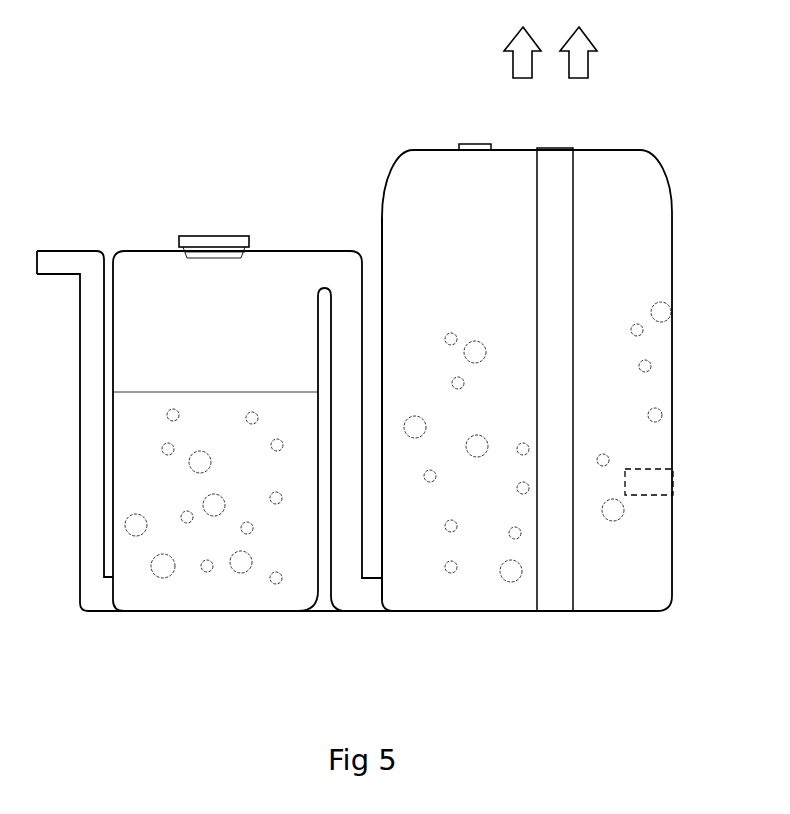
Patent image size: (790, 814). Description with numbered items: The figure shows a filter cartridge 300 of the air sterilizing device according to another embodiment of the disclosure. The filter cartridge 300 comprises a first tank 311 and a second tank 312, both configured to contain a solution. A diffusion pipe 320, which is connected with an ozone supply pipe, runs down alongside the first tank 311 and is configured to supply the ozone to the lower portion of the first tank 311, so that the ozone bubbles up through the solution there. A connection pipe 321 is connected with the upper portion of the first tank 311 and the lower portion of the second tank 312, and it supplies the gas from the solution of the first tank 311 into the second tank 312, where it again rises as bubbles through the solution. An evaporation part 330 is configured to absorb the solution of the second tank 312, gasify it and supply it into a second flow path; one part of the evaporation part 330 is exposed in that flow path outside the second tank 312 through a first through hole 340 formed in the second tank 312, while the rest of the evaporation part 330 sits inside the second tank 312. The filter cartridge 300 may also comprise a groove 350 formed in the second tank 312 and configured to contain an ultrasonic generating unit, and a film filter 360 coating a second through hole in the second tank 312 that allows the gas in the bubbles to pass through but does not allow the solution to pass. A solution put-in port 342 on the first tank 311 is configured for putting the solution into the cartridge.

The filter cartridge 300 is at (79, 35).
The first tank 311 is at (203, 612).
The second tank 312 is at (493, 613).
The diffusion pipe 320 is at (93, 446).
The connection pipe 321 is at (352, 598).
The evaporation part 330 is at (554, 260).
The first through hole 340 is at (553, 152).
The solution put-in port 342 is at (203, 251).
The groove 350 is at (646, 492).
The film filter 360 is at (468, 146).